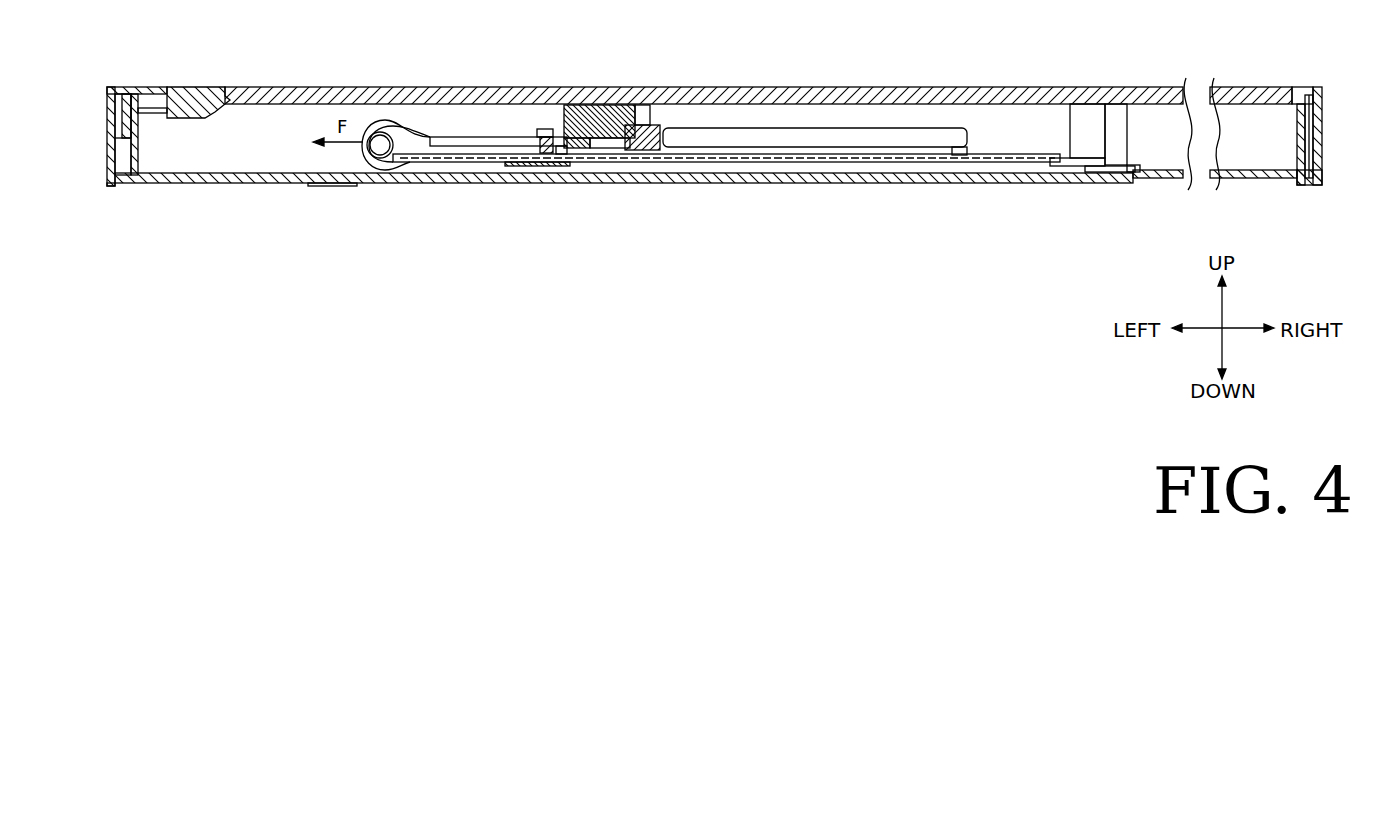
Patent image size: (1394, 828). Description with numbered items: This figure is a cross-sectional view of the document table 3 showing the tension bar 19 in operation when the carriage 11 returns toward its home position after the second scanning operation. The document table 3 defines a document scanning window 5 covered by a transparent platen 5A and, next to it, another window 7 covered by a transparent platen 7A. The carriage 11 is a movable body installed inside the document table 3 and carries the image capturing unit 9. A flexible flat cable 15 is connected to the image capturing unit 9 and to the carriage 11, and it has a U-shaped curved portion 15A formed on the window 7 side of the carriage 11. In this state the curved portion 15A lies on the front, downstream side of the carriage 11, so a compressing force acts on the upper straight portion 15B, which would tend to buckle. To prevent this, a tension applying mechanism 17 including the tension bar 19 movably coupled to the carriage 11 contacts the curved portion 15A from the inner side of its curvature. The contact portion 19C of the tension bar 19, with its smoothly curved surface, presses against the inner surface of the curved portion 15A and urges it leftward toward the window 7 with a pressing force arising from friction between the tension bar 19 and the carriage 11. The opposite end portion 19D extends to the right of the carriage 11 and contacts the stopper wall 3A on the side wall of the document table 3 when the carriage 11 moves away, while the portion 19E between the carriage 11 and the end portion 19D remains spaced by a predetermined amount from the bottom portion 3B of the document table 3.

The document table 3 is at (1326, 115).
The stopper wall 3A is at (1297, 148).
The bottom portion 3B is at (1005, 168).
The document scanning window 5 is at (1148, 88).
The transparent platen 5A is at (758, 95).
The window 7 is at (262, 93).
The transparent platen 7A is at (198, 102).
The image capturing unit 9 is at (598, 106).
The carriage 11 is at (660, 114).
The cable 15 is at (427, 126).
The curved portion 15A is at (383, 168).
The upper straight portion 15B is at (493, 130).
The tension applying mechanism 17 is at (489, 166).
The tension bar 19 is at (450, 157).
The contact portion 19C is at (367, 124).
The end portion 19D is at (968, 152).
The portion 19E is at (807, 128).